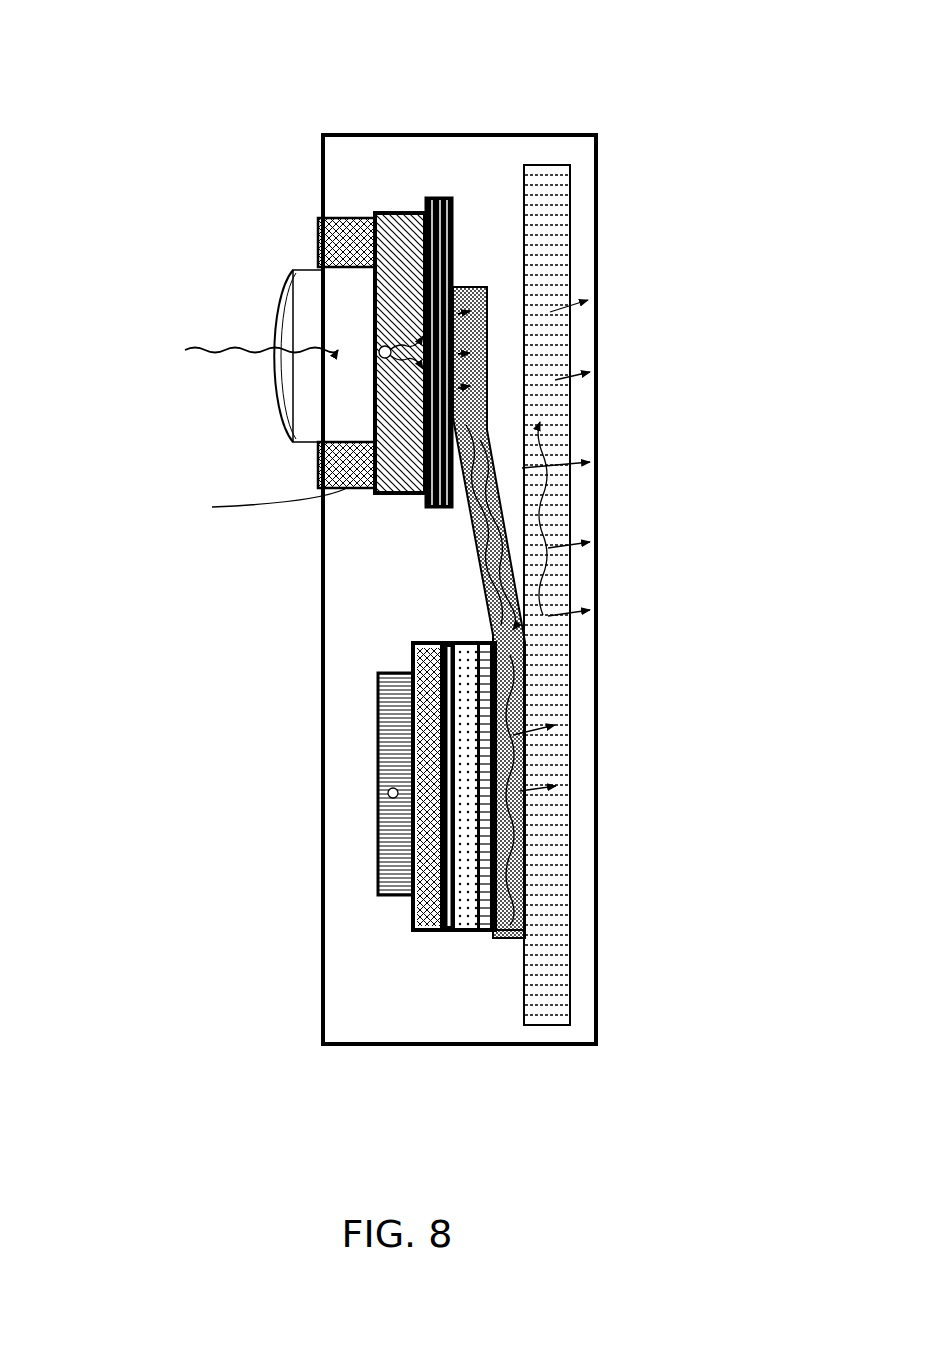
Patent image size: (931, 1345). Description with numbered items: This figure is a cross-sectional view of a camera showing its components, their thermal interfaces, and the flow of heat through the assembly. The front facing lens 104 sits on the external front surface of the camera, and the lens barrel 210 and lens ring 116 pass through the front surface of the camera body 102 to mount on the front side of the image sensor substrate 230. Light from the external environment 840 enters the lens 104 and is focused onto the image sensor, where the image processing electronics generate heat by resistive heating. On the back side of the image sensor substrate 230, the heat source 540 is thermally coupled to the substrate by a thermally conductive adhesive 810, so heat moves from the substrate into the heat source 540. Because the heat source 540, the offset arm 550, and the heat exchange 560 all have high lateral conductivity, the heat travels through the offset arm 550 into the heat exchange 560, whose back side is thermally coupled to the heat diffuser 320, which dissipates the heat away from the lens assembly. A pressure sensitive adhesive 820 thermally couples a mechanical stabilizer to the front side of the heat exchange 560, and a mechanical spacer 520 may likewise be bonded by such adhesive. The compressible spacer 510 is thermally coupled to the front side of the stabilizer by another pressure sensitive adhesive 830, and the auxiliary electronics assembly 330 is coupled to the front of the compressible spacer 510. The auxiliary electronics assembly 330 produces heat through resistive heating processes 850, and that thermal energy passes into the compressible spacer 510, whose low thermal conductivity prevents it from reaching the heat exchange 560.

The camera body 102 is at (320, 128).
The lens 104 is at (280, 316).
The lens ring 116 is at (336, 242).
The lens barrel 210 is at (308, 310).
The image sensor substrate 230 is at (398, 241).
The heat diffuser 320 is at (553, 1032).
The auxiliary electronics assembly 330 is at (386, 743).
The compressible spacer 510 is at (411, 916).
The mechanical spacer 520 is at (465, 943).
The heat source 540 is at (488, 295).
The offset arm 550 is at (461, 516).
The heat exchange 560 is at (507, 944).
The thermally conductive adhesive 810 is at (254, 505).
The pressure sensitive adhesive 820 is at (483, 944).
The pressure sensitive adhesive 830 is at (440, 936).
The light from the external environment 840 is at (232, 342).
The resistive heating processes 850 is at (378, 793).